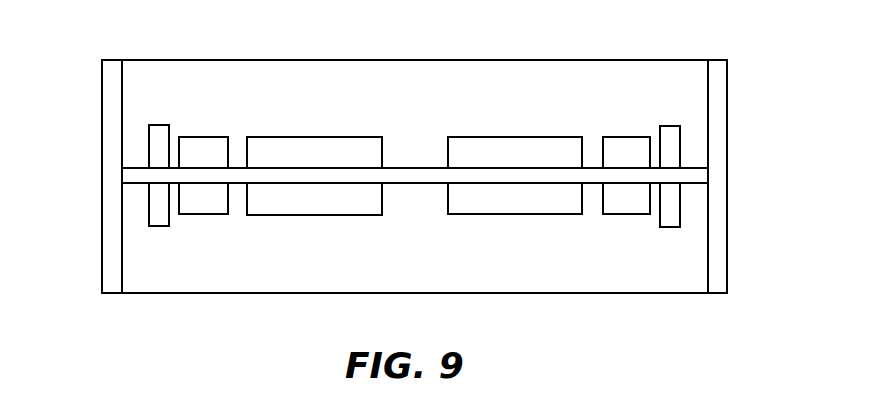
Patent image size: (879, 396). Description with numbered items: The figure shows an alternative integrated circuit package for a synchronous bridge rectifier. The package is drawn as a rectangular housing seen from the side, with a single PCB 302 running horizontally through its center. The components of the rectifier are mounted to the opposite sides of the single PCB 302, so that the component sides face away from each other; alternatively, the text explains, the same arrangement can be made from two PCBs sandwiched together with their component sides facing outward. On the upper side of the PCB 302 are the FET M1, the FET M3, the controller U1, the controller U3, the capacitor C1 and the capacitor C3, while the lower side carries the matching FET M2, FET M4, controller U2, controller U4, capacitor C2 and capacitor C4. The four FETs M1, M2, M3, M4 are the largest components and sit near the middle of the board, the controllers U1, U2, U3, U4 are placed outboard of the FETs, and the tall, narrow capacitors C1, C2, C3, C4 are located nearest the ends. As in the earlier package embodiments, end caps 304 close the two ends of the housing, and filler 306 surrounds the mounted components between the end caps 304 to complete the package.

The single PCB 302 is at (414, 185).
The end caps 304 is at (102, 88).
The filler 306 is at (413, 59).
The capacitor C1 is at (160, 125).
The capacitor C2 is at (160, 227).
The capacitor C3 is at (670, 126).
The capacitor C4 is at (670, 228).
The controller U1 is at (204, 137).
The controller U2 is at (204, 215).
The controller U3 is at (626, 137).
The controller U4 is at (626, 215).
The FET M1 is at (315, 137).
The FET M2 is at (313, 217).
The FET M3 is at (516, 137).
The FET M4 is at (517, 216).